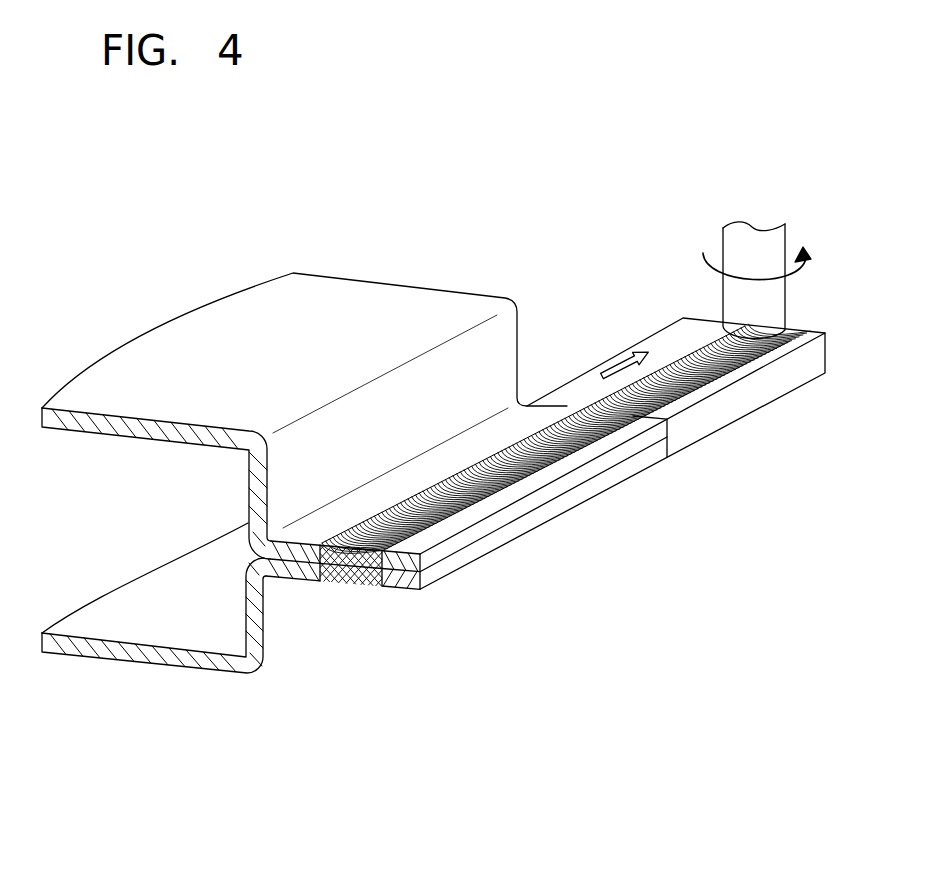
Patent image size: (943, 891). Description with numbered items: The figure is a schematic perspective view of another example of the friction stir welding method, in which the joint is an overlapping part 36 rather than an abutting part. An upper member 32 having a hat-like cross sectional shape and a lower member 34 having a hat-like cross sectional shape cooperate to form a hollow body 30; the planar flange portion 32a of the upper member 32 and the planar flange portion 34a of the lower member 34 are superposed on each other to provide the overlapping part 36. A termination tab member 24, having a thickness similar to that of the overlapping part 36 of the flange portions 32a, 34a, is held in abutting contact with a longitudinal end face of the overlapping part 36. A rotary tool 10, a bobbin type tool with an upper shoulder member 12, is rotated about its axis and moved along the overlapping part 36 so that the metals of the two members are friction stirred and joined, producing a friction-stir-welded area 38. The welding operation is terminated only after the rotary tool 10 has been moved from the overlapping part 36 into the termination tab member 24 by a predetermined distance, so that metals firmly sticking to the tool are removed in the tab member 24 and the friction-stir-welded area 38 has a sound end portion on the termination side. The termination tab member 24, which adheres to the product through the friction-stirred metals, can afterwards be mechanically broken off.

The rotary tool 10 is at (699, 229).
The upper shoulder member 12 is at (737, 307).
The termination tab member 24 is at (760, 424).
The hollow body 30 is at (324, 249).
The upper member 32 is at (212, 340).
The planar flange portion 32a is at (452, 553).
The lower member 34 is at (140, 655).
The planar flange portion 34a is at (445, 566).
The overlapping part 36 is at (427, 593).
The friction-stir-welded area 38 is at (482, 455).